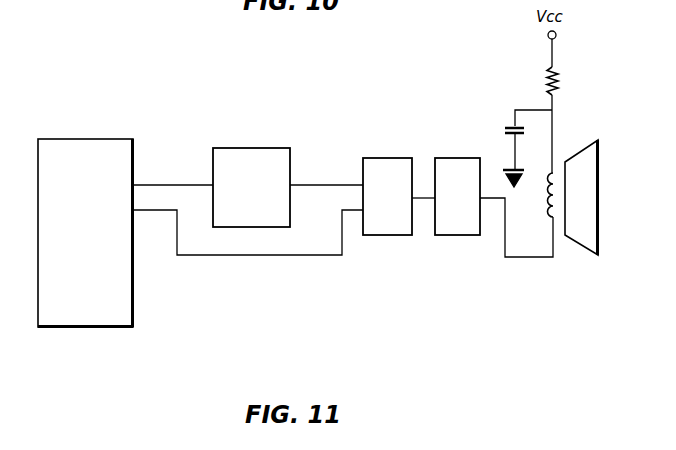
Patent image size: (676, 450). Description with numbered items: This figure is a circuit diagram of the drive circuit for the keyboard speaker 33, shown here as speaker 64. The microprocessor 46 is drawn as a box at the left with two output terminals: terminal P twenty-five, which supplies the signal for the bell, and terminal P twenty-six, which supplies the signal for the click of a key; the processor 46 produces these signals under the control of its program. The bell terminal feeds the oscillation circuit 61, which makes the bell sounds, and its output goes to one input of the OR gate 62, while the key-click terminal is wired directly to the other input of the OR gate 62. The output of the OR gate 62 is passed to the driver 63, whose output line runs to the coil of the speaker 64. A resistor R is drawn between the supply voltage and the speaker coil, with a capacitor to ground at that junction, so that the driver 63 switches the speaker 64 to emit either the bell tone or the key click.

The microprocessor 46 is at (113, 327).
The oscillation circuit 61 is at (287, 159).
The OR gate 62 is at (402, 235).
The driver 63 is at (462, 235).
The speaker 64 is at (585, 245).
The speaker 33 is at (322, 287).
The resistor R is at (559, 80).